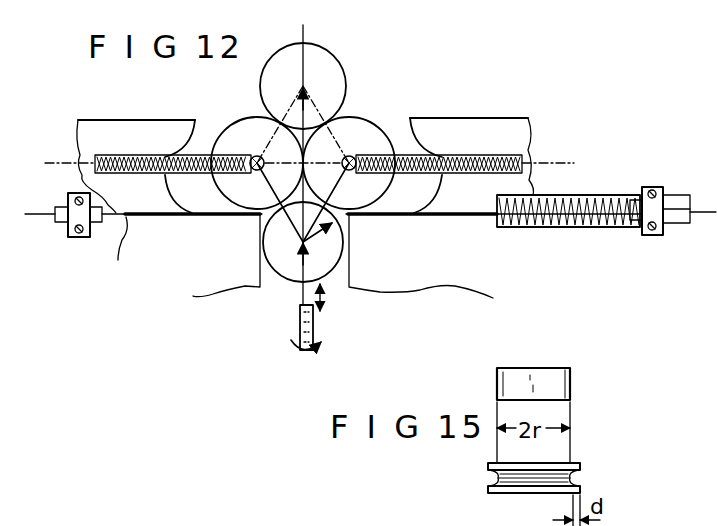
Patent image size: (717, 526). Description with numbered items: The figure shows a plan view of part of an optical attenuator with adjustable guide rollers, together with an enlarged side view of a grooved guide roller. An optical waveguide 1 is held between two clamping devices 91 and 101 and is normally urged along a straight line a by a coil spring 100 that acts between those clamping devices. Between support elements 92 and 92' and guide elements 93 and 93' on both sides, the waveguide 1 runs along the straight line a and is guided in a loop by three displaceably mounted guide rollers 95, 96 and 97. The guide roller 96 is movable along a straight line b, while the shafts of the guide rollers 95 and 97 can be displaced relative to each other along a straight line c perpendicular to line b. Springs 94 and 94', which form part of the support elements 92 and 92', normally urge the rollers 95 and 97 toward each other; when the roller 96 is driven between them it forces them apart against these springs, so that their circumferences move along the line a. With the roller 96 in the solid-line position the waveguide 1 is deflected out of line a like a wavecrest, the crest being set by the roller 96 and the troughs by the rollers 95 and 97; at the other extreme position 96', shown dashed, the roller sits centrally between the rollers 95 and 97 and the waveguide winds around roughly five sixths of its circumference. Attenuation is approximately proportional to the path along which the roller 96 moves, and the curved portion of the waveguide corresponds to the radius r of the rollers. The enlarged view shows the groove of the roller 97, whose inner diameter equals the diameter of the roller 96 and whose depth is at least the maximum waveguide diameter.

In FIG. 12, the optical waveguide 1 is at (43, 205).
In FIG. 12, the clamping device 91 is at (90, 238).
In FIG. 12, the support element 92 is at (136, 149).
In FIG. 12, the support element 92' is at (472, 138).
In FIG. 12, the guide element 93 is at (189, 275).
In FIG. 12, the guide element 93' is at (422, 275).
In FIG. 12, the spring 94 is at (194, 148).
In FIG. 12, the spring 94' is at (438, 146).
In FIG. 12, the guide roller 95 is at (243, 130).
In FIG. 12, the guide roller 96 is at (296, 269).
In FIG. 15, the guide roller 96 is at (509, 384).
In FIG. 12, the guide roller extreme position 96' is at (315, 78).
In FIG. 12, the guide roller 97 is at (350, 128).
In FIG. 15, the guide roller 97 is at (489, 468).
In FIG. 12, the coil spring 100 is at (587, 200).
In FIG. 12, the clamping device 101 is at (658, 187).
In FIG. 12, the straight line a is at (458, 217).
In FIG. 12, the straight line b is at (300, 38).
In FIG. 12, the straight line c is at (558, 152).
In FIG. 12, the radius r is at (317, 237).